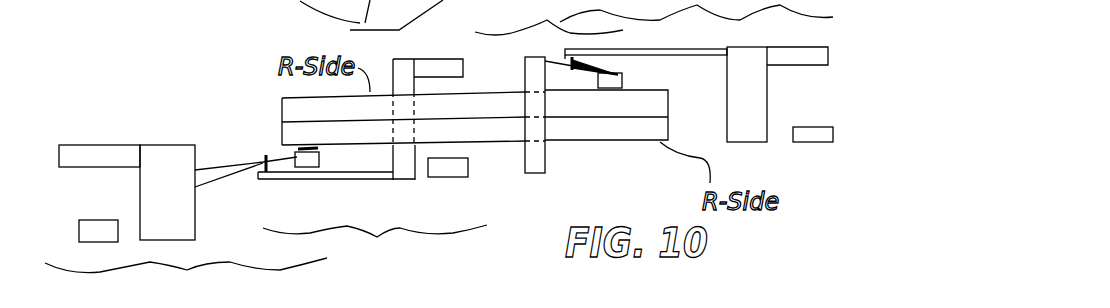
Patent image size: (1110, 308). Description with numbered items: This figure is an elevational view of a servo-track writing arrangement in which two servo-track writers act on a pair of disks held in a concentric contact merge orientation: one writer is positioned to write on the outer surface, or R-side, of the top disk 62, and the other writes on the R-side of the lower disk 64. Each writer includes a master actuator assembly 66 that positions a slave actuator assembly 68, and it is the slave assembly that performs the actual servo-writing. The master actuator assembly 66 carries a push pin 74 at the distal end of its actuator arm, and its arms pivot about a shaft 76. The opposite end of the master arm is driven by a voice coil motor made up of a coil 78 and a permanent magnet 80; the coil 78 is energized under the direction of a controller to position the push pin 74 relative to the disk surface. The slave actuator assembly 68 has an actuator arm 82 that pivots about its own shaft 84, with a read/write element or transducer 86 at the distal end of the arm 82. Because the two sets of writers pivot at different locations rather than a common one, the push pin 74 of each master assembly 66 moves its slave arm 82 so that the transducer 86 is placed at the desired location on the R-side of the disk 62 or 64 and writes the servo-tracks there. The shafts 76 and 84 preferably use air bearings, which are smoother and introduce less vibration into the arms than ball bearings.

The top disk 62 is at (295, 102).
The lower disk 64 is at (620, 130).
The master actuator assembly 66 is at (375, 248).
The slave actuator assembly 68 is at (439, 154).
The push pin 74 is at (265, 155).
The shaft 76 is at (407, 170).
The coil 78 is at (432, 63).
The permanent magnet 80 is at (453, 170).
The actuator arm 82 is at (213, 178).
The shaft 84 is at (158, 153).
The transducer 86 is at (308, 160).